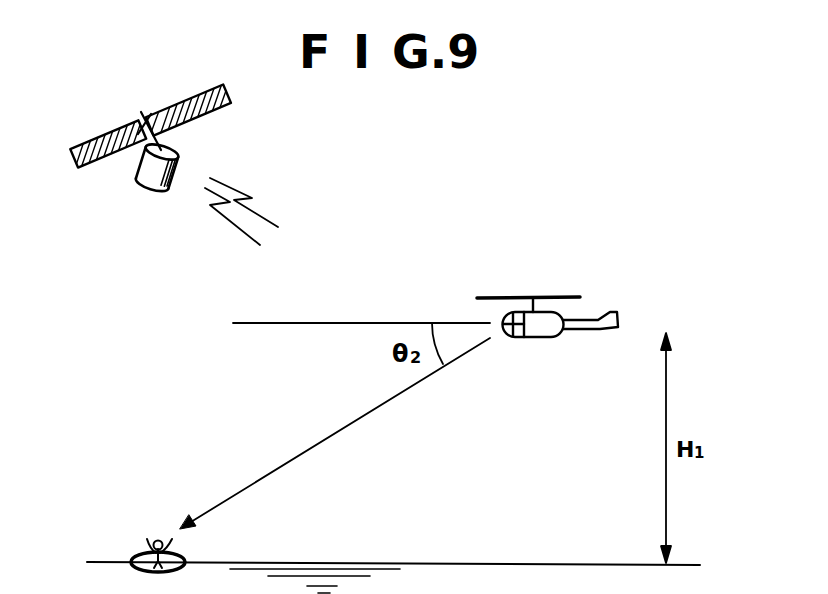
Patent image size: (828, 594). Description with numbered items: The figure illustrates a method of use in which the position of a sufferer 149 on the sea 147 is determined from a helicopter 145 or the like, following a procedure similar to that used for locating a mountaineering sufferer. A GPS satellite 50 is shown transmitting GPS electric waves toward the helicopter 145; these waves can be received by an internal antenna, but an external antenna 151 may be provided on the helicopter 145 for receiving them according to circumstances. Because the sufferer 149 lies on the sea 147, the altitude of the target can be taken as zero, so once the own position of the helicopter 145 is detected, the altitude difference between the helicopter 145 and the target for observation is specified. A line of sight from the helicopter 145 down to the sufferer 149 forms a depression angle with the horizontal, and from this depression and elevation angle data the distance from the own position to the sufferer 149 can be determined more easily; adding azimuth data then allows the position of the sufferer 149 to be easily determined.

The satellite 50 is at (144, 180).
The helicopter 145 is at (595, 310).
The external antenna 151 is at (500, 312).
The sea 147 is at (505, 575).
The sufferer 149 is at (138, 540).